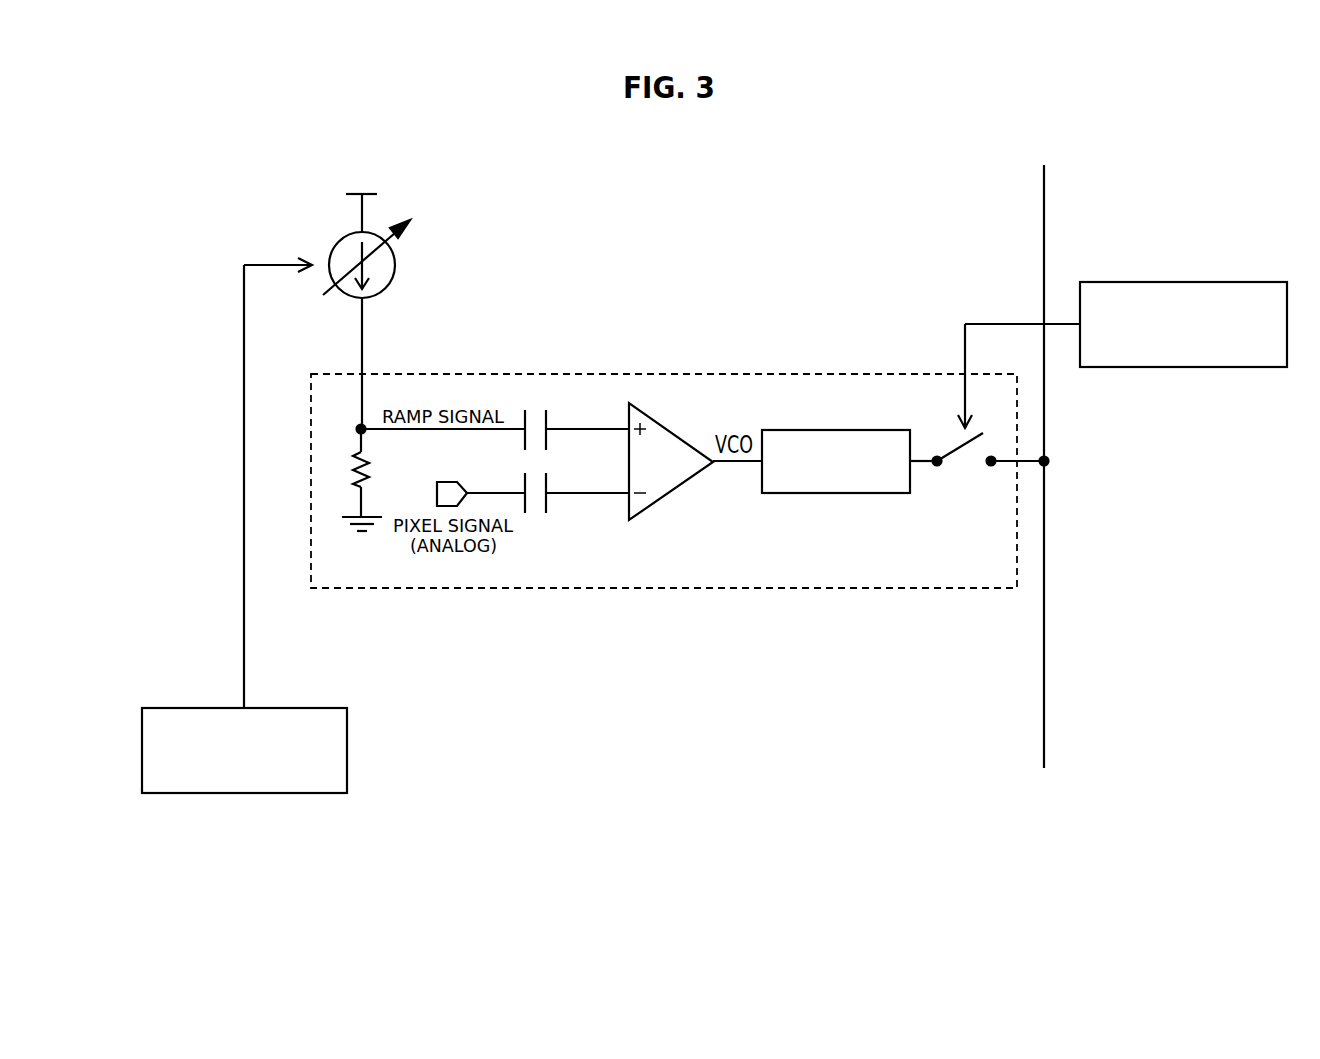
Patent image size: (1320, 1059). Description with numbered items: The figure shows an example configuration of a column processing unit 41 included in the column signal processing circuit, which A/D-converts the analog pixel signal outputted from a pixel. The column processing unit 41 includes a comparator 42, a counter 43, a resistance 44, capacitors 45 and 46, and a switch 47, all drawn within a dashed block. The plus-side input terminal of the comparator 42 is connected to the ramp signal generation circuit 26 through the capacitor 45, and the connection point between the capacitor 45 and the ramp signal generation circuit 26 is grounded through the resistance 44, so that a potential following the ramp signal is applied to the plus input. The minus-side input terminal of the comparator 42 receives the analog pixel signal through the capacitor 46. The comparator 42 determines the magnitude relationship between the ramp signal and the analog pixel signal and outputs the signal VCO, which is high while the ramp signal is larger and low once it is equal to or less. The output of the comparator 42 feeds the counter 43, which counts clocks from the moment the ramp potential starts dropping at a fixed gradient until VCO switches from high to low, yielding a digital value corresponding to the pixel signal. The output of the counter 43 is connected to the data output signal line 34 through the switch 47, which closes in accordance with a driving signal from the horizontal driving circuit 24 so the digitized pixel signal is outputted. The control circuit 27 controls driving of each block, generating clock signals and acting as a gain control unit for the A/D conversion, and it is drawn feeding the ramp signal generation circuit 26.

The horizontal driving circuit 24 is at (1185, 282).
The ramp signal generation circuit 26 is at (396, 266).
The control circuit 27 is at (245, 793).
The data output signal line 34 is at (1043, 197).
The column processing unit 41 is at (662, 590).
The comparator 42 is at (670, 490).
The counter 43 is at (835, 493).
The resistance 44 is at (372, 458).
The capacitor 45 is at (548, 421).
The capacitor 46 is at (548, 484).
The switch 47 is at (961, 447).